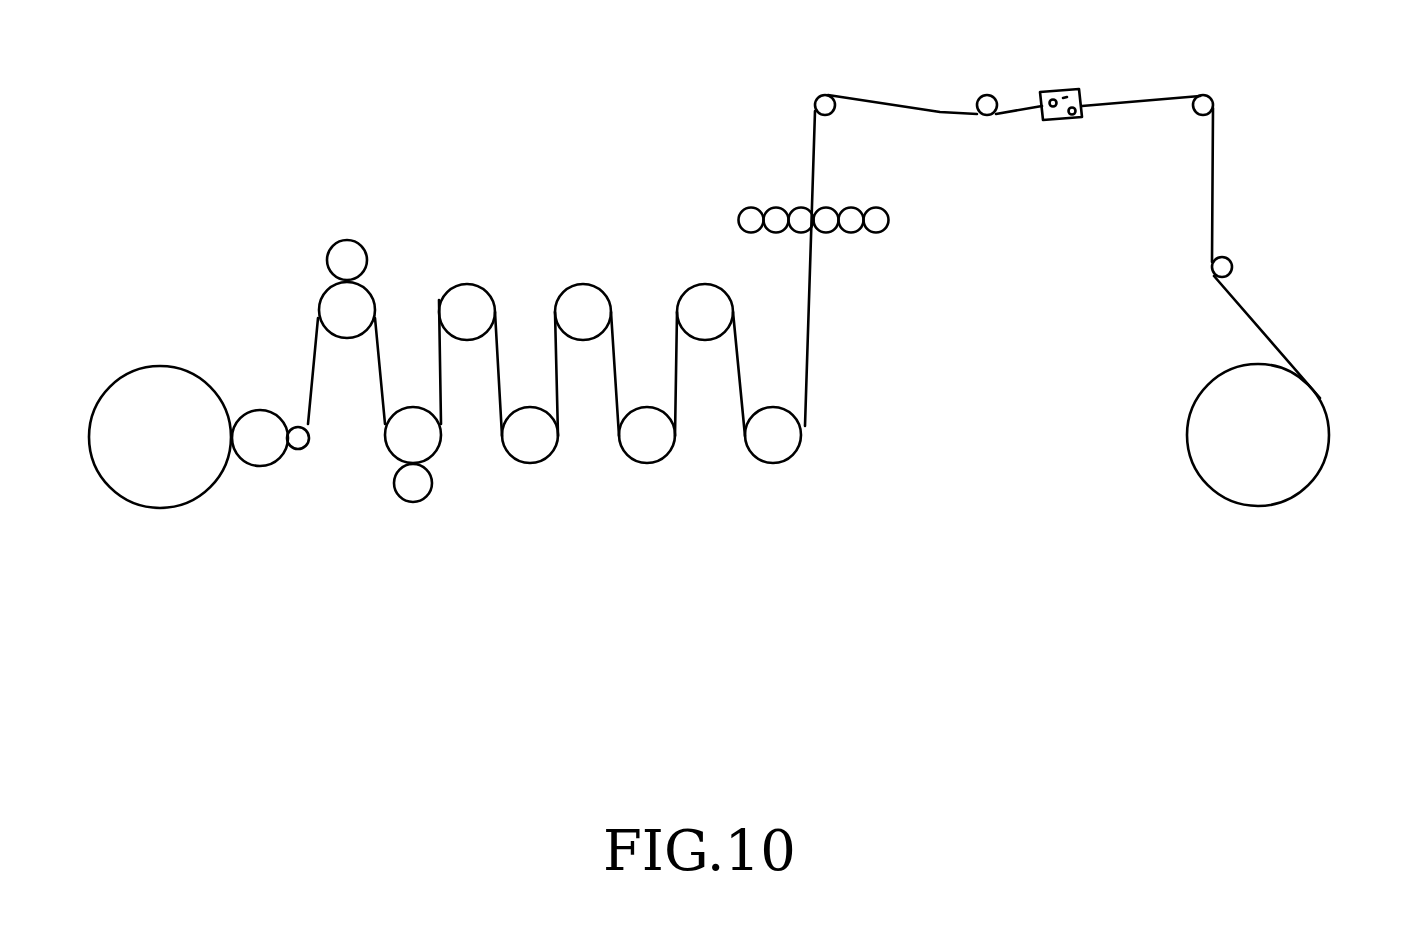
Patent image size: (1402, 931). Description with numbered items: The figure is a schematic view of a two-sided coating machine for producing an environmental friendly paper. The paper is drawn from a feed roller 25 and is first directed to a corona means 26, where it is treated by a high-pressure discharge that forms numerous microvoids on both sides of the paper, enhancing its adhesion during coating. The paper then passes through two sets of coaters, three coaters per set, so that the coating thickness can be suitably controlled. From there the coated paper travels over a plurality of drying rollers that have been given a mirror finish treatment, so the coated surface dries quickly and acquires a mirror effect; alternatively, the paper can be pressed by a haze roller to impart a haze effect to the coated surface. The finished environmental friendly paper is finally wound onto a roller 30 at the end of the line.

The feed roller 25 is at (1293, 300).
The corona means 26 is at (963, 63).
The roller 30 is at (199, 393).